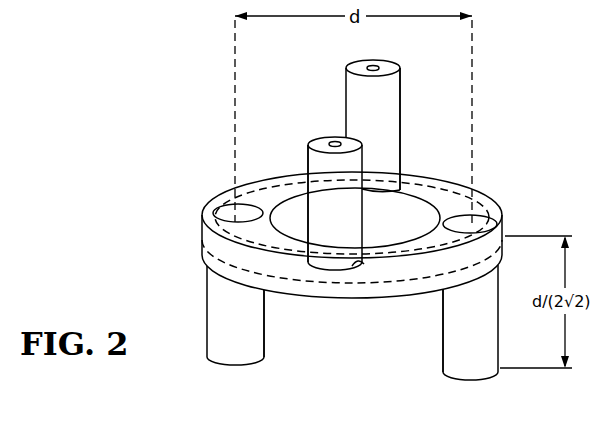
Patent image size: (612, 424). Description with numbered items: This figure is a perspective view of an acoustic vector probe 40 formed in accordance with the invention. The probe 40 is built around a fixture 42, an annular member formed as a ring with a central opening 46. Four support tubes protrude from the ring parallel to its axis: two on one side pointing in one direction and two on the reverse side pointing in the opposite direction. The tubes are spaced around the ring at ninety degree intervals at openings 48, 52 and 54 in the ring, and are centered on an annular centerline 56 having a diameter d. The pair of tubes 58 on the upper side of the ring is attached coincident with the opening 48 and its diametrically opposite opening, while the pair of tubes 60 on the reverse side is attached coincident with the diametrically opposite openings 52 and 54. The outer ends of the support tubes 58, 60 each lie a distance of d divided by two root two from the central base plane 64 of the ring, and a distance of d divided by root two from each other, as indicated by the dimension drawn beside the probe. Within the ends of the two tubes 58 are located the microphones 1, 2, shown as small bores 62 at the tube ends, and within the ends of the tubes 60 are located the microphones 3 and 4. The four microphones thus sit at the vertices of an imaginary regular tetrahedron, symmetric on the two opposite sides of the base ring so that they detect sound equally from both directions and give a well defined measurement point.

The microphone 1 is at (310, 140).
The microphone 2 is at (396, 66).
The microphone 3 is at (215, 366).
The microphone 4 is at (452, 378).
The acoustic vector probe 40 is at (491, 105).
The fixture 42 is at (204, 268).
The central opening 46 is at (262, 203).
The opening in the ring 48 is at (358, 268).
The opening in the ring 52 is at (400, 183).
The opening in the ring 54 is at (222, 212).
The annular centerline 56 is at (478, 190).
The support tubes 58 is at (398, 83).
The support tubes 60 is at (258, 340).
The post bore 62 is at (374, 64).
The central base plane 64 is at (206, 256).